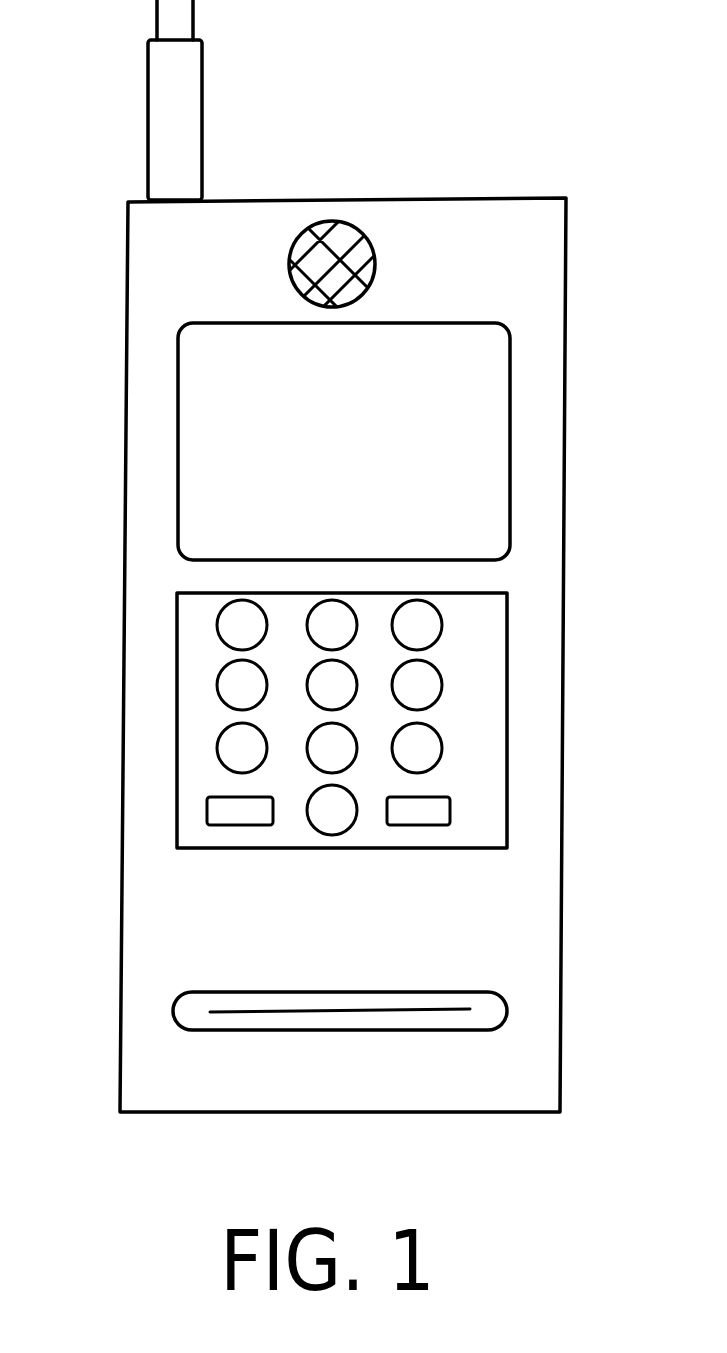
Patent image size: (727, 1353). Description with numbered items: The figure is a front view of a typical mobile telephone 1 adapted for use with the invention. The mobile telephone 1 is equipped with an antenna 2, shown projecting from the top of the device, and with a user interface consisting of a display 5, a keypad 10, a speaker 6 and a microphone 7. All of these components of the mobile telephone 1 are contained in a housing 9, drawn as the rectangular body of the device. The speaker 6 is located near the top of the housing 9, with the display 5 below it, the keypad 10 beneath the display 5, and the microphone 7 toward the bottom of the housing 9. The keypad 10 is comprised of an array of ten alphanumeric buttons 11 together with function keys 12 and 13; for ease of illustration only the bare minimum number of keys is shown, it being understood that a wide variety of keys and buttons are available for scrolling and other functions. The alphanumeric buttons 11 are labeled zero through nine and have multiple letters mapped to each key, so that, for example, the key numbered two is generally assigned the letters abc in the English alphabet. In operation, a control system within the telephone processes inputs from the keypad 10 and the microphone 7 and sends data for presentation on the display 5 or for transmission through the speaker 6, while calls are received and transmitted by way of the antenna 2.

The mobile telephone 1 is at (372, 566).
The antenna 2 is at (163, 93).
The display 5 is at (210, 418).
The speaker 6 is at (325, 228).
The microphone 7 is at (175, 1010).
The housing 9 is at (567, 297).
The keypad 10 is at (195, 716).
The alphanumeric buttons 11 is at (218, 627).
The function key 12 is at (247, 818).
The function key 13 is at (415, 808).